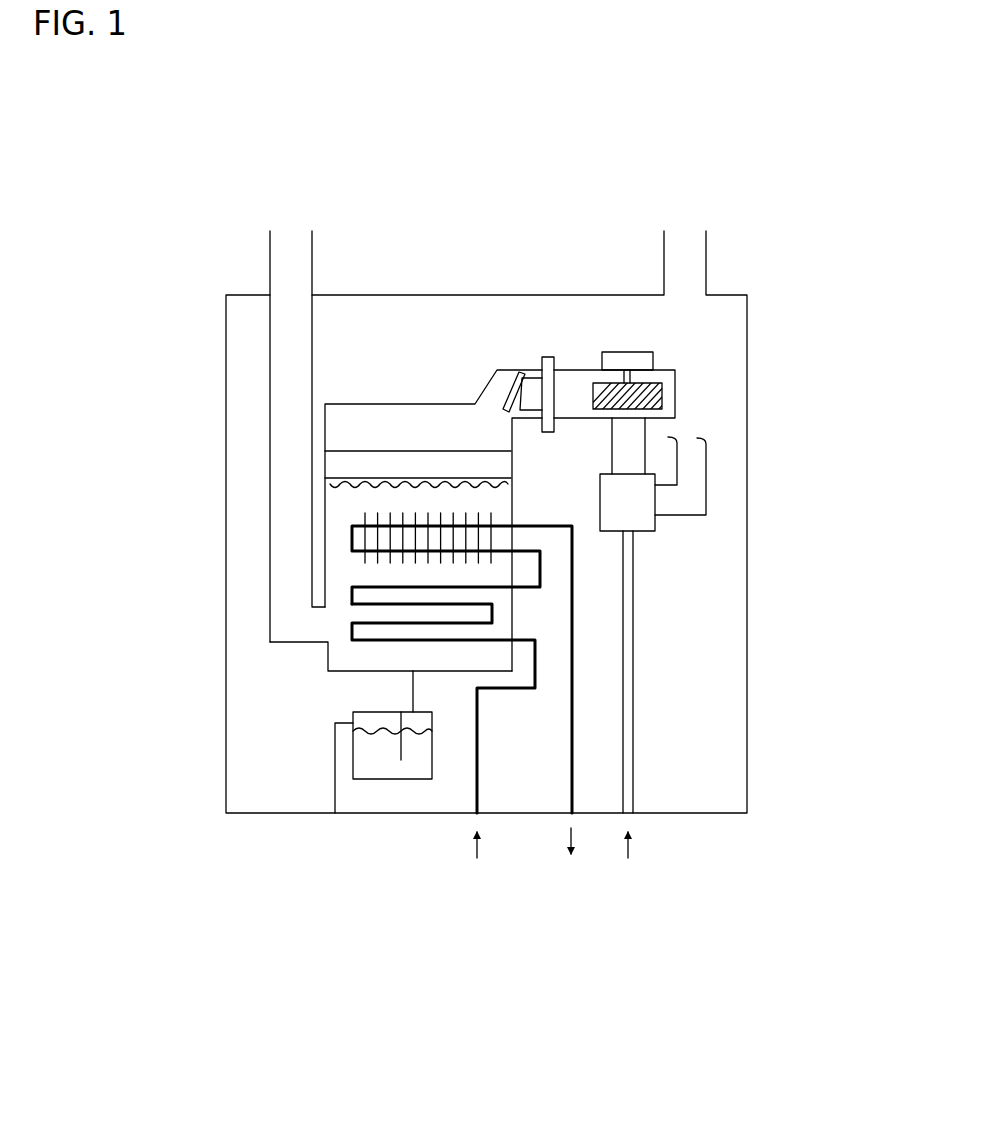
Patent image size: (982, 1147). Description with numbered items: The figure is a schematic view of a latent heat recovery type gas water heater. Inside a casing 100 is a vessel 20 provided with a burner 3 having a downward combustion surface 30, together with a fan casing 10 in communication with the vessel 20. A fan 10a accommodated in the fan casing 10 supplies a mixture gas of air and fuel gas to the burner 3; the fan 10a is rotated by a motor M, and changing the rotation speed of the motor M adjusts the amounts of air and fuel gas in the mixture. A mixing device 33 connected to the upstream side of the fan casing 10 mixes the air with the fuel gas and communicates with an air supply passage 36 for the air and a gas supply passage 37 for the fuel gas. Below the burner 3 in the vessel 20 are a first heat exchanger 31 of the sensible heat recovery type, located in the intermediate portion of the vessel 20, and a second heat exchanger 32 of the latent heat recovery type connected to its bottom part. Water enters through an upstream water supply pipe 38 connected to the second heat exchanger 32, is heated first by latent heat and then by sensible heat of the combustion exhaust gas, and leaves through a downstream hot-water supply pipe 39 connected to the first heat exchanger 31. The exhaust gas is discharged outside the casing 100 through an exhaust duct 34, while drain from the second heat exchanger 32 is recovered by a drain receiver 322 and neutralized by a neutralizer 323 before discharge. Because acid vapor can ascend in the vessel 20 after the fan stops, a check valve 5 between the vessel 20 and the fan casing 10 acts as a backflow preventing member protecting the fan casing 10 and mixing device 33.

The casing 100 is at (226, 350).
The vessel 20 is at (352, 404).
The burner 3 is at (415, 467).
The check valve 5 is at (505, 384).
The motor M is at (627, 360).
The fan casing 10 is at (668, 372).
The fan 10a is at (655, 396).
The air supply passage 36 is at (690, 465).
The mixing device 33 is at (627, 508).
The gas supply passage 37 is at (635, 710).
The exhaust duct 34 is at (290, 444).
The downward combustion surface 30 is at (355, 490).
The first heat exchanger 31 is at (350, 551).
The second heat exchanger 32 is at (350, 612).
The drain receiver 322 is at (355, 671).
The neutralizer 323 is at (388, 780).
The water supply pipe 38 is at (477, 780).
The hot-water supply pipe 39 is at (571, 780).